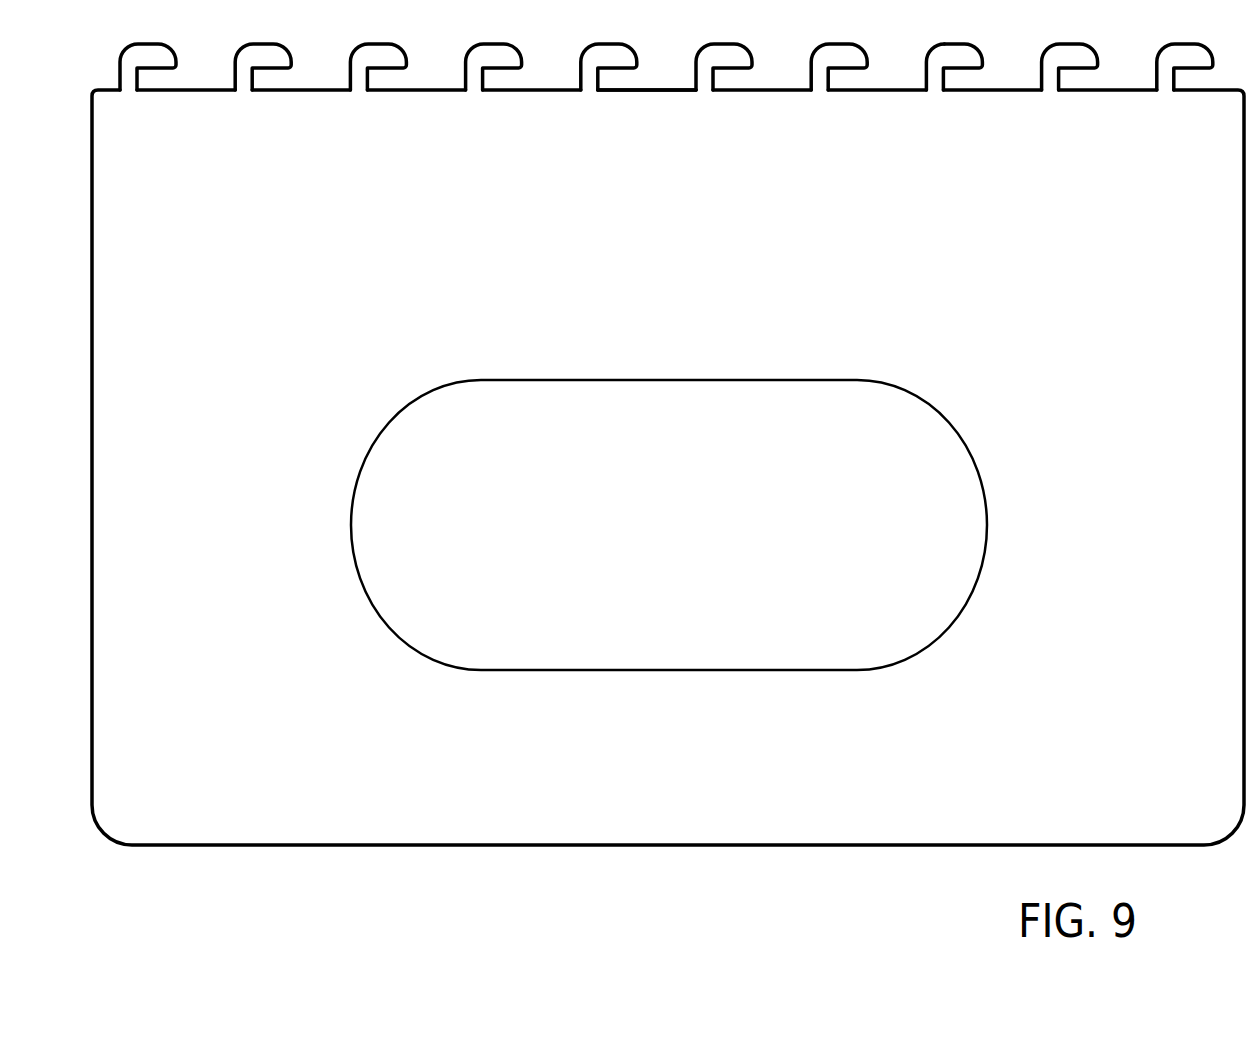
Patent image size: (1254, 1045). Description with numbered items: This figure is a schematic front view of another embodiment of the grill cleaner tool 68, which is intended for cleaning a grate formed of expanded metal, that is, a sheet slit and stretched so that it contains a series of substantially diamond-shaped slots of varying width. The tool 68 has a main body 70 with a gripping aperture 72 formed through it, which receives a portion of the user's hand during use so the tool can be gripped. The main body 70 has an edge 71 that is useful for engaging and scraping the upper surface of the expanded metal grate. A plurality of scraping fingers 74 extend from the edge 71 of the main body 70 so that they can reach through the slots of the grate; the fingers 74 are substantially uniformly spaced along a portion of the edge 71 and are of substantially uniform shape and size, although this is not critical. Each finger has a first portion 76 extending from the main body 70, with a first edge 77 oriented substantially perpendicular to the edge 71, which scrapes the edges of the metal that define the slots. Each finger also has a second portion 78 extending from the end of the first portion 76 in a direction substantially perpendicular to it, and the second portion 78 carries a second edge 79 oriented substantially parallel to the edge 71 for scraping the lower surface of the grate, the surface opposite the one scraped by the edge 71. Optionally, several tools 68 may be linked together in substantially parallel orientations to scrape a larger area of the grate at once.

The grill cleaner tool 68 is at (668, 489).
The main body 70 is at (832, 846).
The edge 71 is at (643, 88).
The gripping aperture 72 is at (678, 380).
The scraping fingers 74 is at (747, 50).
The first portion 76 is at (935, 75).
The first edge 77 is at (488, 82).
The second portion 78 is at (963, 58).
The second edge 79 is at (384, 76).